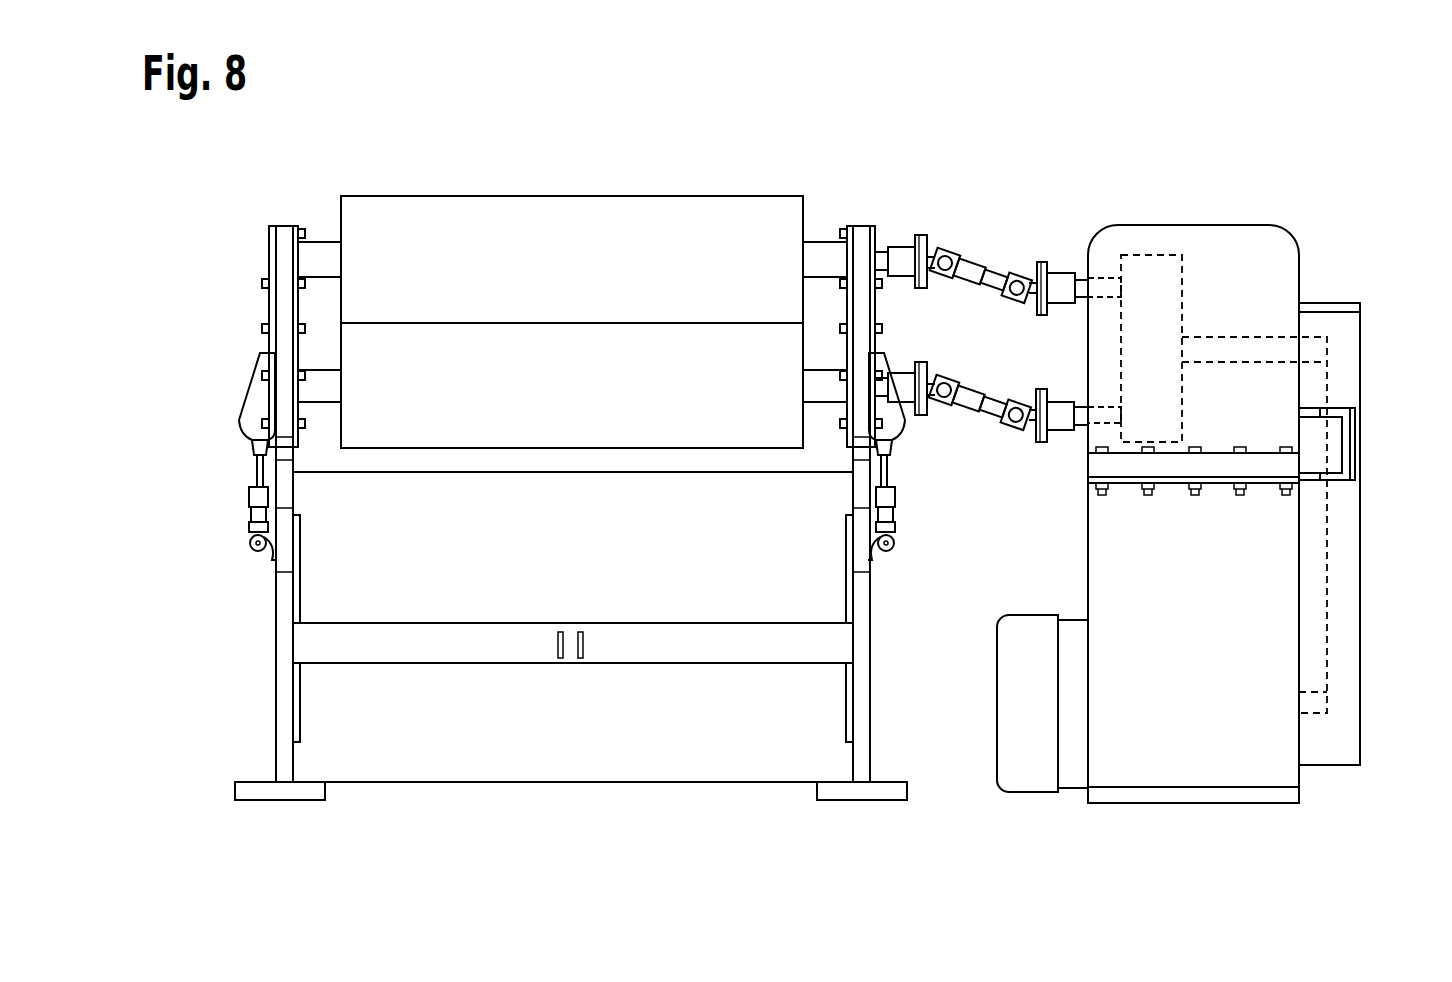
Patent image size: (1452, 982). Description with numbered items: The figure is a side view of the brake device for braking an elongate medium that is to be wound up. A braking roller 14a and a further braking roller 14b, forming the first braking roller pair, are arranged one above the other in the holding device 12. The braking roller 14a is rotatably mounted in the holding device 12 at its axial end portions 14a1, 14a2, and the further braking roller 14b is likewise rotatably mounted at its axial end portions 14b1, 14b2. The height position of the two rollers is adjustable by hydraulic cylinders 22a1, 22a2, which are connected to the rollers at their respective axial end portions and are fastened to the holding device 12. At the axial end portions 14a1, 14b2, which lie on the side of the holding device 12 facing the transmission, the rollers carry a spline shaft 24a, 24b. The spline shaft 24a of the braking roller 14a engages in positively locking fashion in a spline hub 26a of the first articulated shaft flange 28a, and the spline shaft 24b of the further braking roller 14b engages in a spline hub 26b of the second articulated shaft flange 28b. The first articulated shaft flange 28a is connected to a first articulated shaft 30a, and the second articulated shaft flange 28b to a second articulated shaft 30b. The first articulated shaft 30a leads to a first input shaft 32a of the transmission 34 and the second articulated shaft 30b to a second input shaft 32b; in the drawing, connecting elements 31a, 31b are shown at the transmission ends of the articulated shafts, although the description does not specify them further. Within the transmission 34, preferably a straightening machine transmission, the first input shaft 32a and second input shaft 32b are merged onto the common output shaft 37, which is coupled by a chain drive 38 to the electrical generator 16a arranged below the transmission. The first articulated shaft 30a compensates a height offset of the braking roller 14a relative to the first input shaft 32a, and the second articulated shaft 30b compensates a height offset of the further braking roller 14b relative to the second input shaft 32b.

The holding device 12 is at (712, 650).
The braking roller 14a is at (602, 208).
The further braking roller 14b is at (602, 432).
The axial end portion 14a1 is at (822, 248).
The axial end portion 14a2 is at (313, 262).
The axial end portion 14b1 is at (822, 380).
The axial end portion 14b2 is at (313, 390).
The electrical generator 16a is at (1030, 777).
The hydraulic cylinder 22a1 is at (893, 530).
The hydraulic cylinder 22a2 is at (249, 528).
The spline shaft 24a is at (886, 247).
The spline shaft 24b is at (900, 385).
The spline hub 26a is at (934, 202).
The first articulated shaft flange 28a is at (906, 240).
The spline hub 26b is at (964, 429).
The second articulated shaft flange 28b is at (907, 395).
The first articulated shaft 30a is at (988, 273).
The second articulated shaft 30b is at (990, 403).
The upper gearbox-side coupling 31a is at (1060, 283).
The lower gearbox-side coupling 31b is at (1060, 414).
The first input shaft 32a is at (1103, 288).
The second input shaft 32b is at (1097, 412).
The transmission 34 is at (1224, 242).
The common output shaft 37 is at (1265, 350).
The chain drive 38 is at (1340, 596).